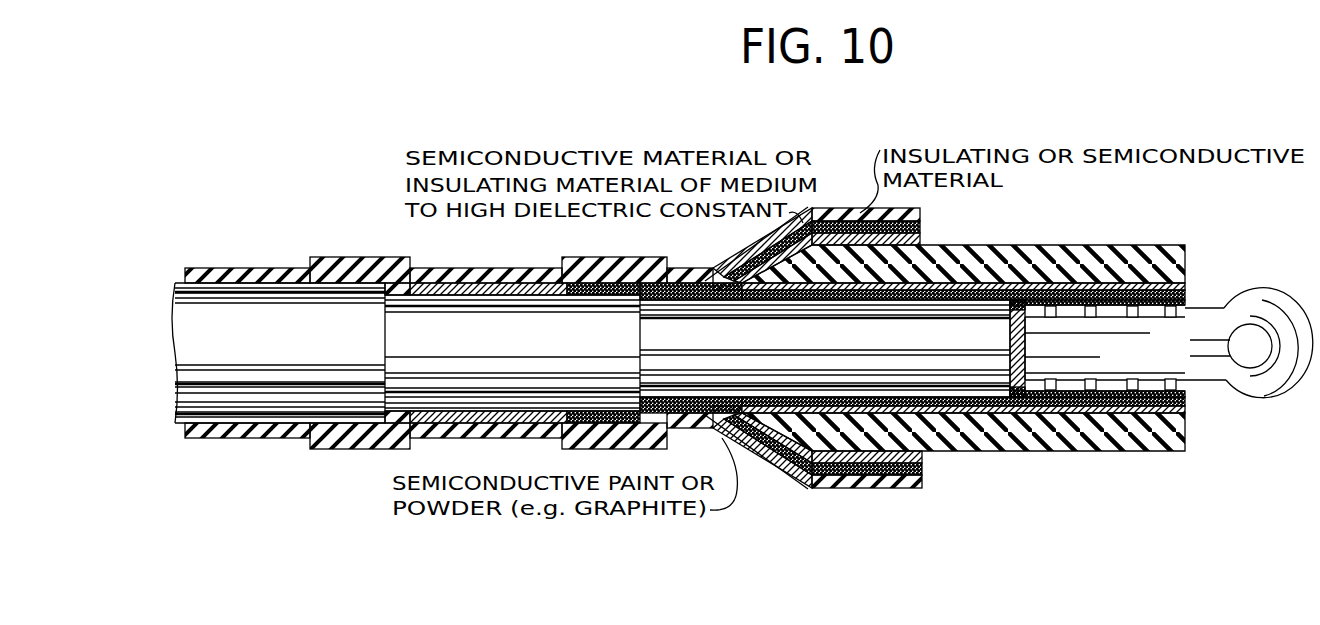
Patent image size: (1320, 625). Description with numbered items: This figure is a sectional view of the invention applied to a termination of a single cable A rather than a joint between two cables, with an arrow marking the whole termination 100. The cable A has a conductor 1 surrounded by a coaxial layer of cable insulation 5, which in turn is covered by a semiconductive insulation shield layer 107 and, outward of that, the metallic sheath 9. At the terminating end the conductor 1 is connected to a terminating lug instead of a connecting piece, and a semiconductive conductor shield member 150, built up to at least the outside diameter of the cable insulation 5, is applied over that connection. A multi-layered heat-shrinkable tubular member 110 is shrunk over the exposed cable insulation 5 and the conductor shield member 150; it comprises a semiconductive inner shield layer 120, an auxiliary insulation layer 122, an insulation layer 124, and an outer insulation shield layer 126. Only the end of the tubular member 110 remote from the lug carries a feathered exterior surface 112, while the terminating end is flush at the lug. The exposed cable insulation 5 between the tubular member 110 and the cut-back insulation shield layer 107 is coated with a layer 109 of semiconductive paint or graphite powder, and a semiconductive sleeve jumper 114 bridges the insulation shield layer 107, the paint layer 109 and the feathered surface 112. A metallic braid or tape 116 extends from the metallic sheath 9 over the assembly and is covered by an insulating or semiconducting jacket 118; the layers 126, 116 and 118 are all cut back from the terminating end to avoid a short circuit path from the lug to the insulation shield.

The cable termination assembly 100 is at (930, 497).
The metallic sheath 9 is at (278, 353).
The cable A is at (181, 442).
The insulating or semiconducting jacket 118 is at (215, 437).
The insulation shield layer 107 is at (512, 353).
The layer of semiconductive paint or semiconductive powder 109 is at (702, 303).
The cable insulation 5 is at (825, 348).
The semiconductive inner shield layer 120 is at (887, 392).
The auxiliary insulation layer 122 is at (1160, 417).
The insulation layer 124 is at (1093, 440).
The metallic braid or metallic tape 116 is at (920, 224).
The semiconductive sleeve jumper 114 is at (815, 470).
The feathered exterior surface 112 is at (765, 445).
The outer or insulation shield layer 126 is at (866, 478).
The conductor 1 is at (1022, 345).
The semiconductive conductor shield member 150 is at (1117, 390).
The multi-layered heat-shrinkable tubular member 110 is at (1192, 398).